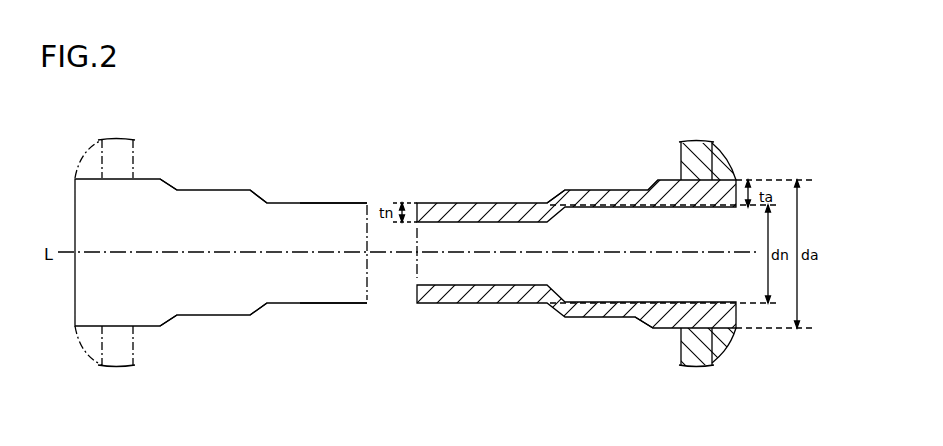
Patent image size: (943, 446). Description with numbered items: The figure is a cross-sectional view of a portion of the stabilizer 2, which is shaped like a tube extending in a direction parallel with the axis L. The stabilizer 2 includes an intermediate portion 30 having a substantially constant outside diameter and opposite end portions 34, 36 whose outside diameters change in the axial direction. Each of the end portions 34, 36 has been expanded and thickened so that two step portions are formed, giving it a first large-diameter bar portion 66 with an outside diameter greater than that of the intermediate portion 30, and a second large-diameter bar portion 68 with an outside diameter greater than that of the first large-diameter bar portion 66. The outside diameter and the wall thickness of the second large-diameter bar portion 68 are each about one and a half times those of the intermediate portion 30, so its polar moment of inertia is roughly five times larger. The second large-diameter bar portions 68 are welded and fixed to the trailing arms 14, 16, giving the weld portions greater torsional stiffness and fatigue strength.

The stabilizer 2 is at (405, 249).
The trailing arm 14 is at (118, 150).
The trailing arm 16 is at (697, 360).
The intermediate portion 30 is at (358, 175).
The end portion 34 is at (160, 158).
The end portion 36 is at (621, 153).
The first large-diameter bar portion 66 is at (593, 195).
The second large-diameter bar portion 68 is at (147, 327).